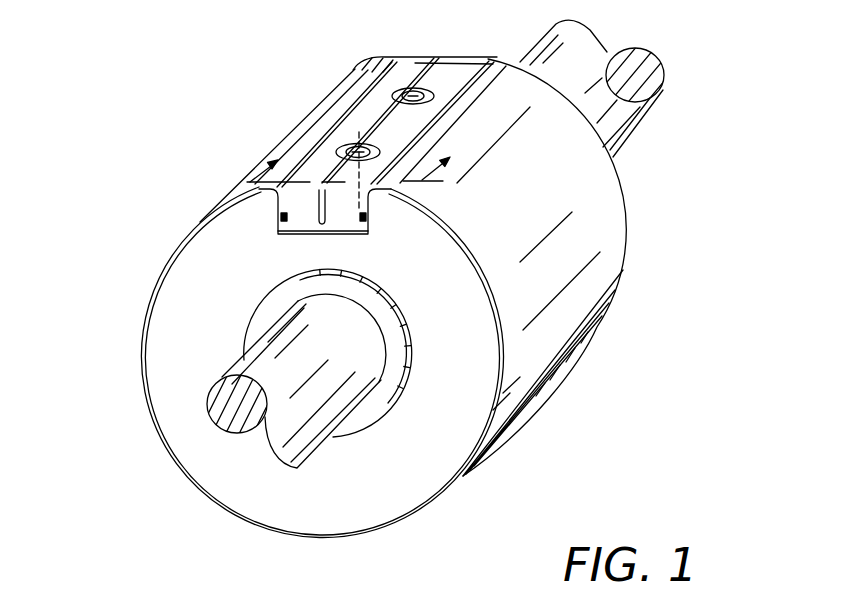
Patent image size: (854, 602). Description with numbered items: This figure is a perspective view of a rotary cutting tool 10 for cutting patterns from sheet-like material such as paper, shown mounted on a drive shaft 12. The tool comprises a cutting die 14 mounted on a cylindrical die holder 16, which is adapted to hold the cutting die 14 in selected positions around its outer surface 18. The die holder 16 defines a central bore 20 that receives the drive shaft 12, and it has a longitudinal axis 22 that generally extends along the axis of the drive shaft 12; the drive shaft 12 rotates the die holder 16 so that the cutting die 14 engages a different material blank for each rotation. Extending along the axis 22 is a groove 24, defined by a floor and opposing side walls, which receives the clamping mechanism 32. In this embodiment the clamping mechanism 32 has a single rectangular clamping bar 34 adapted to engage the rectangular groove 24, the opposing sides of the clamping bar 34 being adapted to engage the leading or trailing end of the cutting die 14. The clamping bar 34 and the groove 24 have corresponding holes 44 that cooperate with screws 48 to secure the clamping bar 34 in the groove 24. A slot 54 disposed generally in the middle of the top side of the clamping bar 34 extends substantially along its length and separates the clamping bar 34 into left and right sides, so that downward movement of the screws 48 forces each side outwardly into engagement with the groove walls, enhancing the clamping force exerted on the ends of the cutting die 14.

The rotary cutting tool 10 is at (128, 191).
The drive shaft 12 is at (628, 118).
The cutting die 14 is at (507, 364).
The die holder 16 is at (163, 334).
The outer surface 18 is at (160, 377).
The central bore 20 is at (308, 272).
The longitudinal axis 22 is at (215, 414).
The groove 24 is at (277, 233).
The clamping mechanism 32 is at (400, 43).
The clamping bar 34 is at (423, 60).
The holes 44 is at (404, 97).
The screws 48 is at (396, 90).
The slot 54 is at (440, 62).